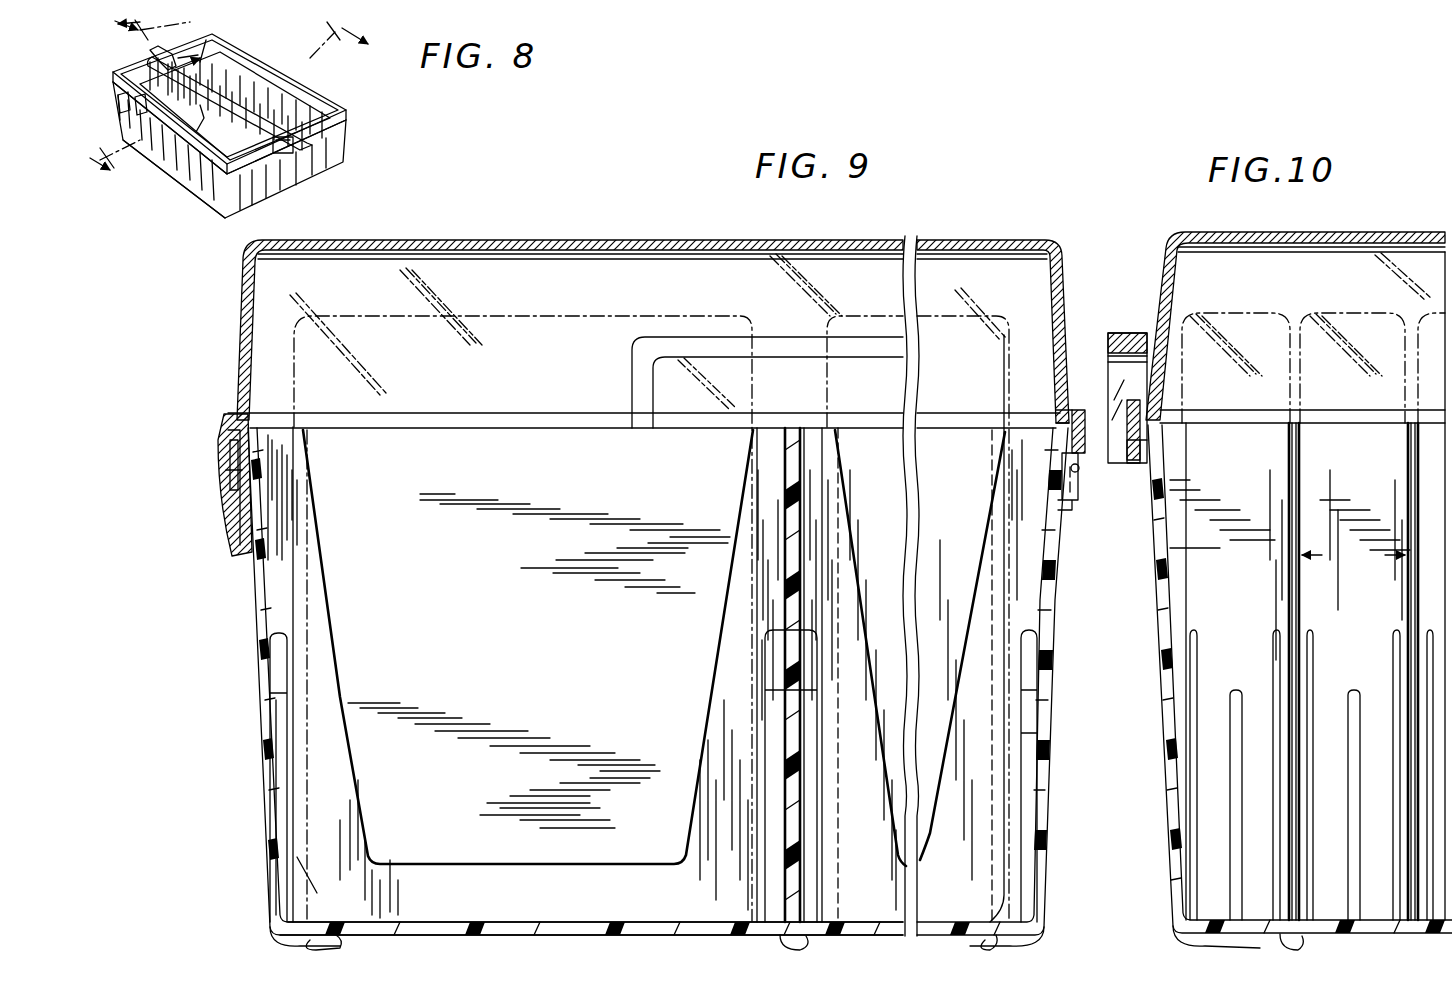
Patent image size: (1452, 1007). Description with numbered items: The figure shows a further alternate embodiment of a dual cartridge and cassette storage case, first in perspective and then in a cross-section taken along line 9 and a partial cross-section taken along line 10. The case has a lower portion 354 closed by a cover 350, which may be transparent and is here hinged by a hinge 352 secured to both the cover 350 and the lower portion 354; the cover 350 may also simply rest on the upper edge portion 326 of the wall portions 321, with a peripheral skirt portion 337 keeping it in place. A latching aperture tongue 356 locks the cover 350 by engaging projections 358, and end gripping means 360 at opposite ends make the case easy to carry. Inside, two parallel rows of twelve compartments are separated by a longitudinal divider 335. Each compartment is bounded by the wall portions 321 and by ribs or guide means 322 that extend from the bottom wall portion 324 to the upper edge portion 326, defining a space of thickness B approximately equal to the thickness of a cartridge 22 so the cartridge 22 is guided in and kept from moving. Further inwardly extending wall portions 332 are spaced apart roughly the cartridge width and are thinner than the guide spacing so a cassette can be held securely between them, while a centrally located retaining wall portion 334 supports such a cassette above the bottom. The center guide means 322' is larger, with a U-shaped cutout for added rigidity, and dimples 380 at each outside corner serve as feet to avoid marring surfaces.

In FIG. 8, the section line 9— 9 is at (236, 115).
In FIG. 8, the section line 10— 10 is at (142, 56).
In FIG. 9, the cartridge 22 is at (400, 320).
In FIG. 10, the cartridge 22 is at (1232, 314).
In FIG. 10, the thickness B is at (1353, 556).
In FIG. 8, the wall portions 321 is at (248, 200).
In FIG. 9, the wall portions 321 is at (255, 580).
In FIG. 10, the wall portions 321 is at (1166, 740).
In FIG. 9, the guide means 322 is at (648, 628).
In FIG. 10, the guide means 322 is at (1337, 565).
In FIG. 8, the center guide means 322' is at (235, 132).
In FIG. 9, the center guide means 322' is at (645, 674).
In FIG. 9, the bottom wall portion 324 is at (548, 920).
In FIG. 9, the upper edge portion 326 is at (250, 426).
In FIG. 10, the upper edge portion 326 is at (1302, 416).
In FIG. 9, the further inwardly extending wall portions 332 is at (283, 648).
In FIG. 10, the further inwardly extending wall portions 332 is at (1273, 632).
In FIG. 9, the retaining wall portion 334 is at (298, 716).
In FIG. 10, the retaining wall portion 334 is at (1236, 690).
In FIG. 8, the longitudinal divider 335 is at (186, 56).
In FIG. 9, the longitudinal divider 335 is at (786, 438).
In FIG. 10, the longitudinal divider 335 is at (1350, 470).
In FIG. 8, the peripheral skirt portion 337 is at (208, 180).
In FIG. 9, the peripheral skirt portion 337 is at (1060, 410).
In FIG. 10, the peripheral skirt portion 337 is at (1134, 466).
In FIG. 8, the cover 350 is at (224, 42).
In FIG. 9, the cover 350 is at (532, 236).
In FIG. 10, the cover 350 is at (1210, 232).
In FIG. 9, the hinge 352 is at (1072, 505).
In FIG. 8, the lower portion 354 is at (286, 175).
In FIG. 9, the lower portion 354 is at (246, 668).
In FIG. 10, the lower portion 354 is at (1162, 840).
In FIG. 8, the latching aperture tongue 356 is at (130, 118).
In FIG. 9, the latching aperture tongue 356 is at (228, 512).
In FIG. 9, the projections 358 is at (232, 468).
In FIG. 8, the end gripping means 360 is at (300, 140).
In FIG. 9, the end gripping means 360 is at (762, 345).
In FIG. 10, the end gripping means 360 is at (1108, 350).
In FIG. 9, the dimples 380 is at (275, 946).
In FIG. 10, the dimples 380 is at (1178, 944).